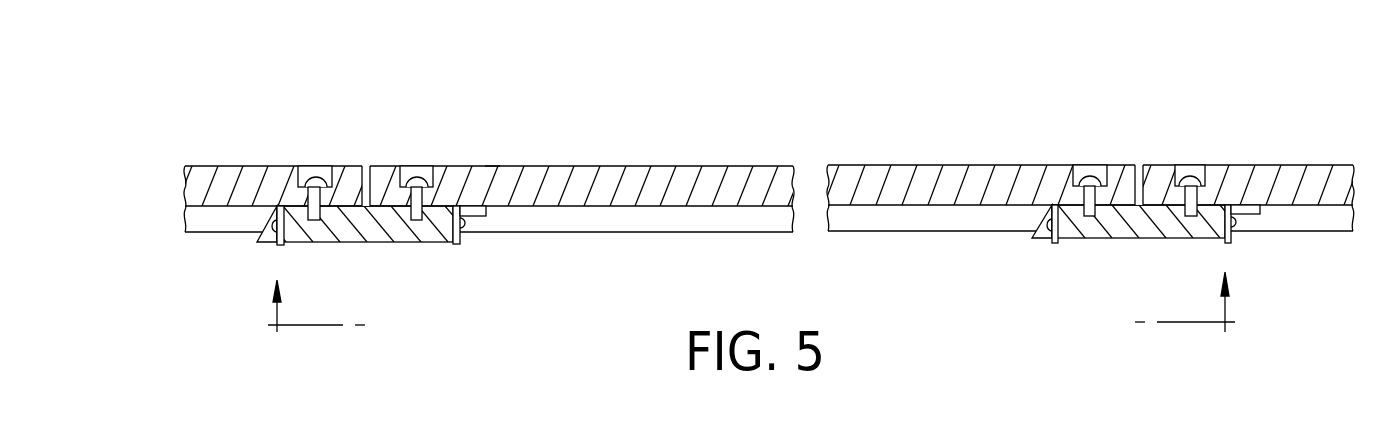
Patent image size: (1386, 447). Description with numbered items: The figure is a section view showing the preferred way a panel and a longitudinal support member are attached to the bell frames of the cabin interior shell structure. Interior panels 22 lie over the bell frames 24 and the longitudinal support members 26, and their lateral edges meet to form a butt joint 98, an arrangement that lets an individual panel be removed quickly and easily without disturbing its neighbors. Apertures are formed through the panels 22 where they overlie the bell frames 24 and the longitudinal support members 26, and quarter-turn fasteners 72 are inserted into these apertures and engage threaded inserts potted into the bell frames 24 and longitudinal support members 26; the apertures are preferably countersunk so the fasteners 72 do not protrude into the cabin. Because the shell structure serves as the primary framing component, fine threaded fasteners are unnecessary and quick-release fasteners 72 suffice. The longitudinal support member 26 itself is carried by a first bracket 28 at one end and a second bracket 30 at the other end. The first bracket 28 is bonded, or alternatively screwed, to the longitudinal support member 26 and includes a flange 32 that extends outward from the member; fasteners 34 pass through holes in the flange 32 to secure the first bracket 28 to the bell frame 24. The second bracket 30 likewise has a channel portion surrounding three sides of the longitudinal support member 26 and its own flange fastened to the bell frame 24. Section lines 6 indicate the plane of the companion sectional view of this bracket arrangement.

The panel 22 is at (473, 166).
The bell frame 24 is at (378, 243).
The longitudinal support member 26 is at (703, 217).
The first bracket 28 is at (492, 166).
The second bracket 30 is at (1053, 244).
The flange 32 is at (456, 245).
The fastener 34 is at (472, 232).
The quarter-turn fastener 72 is at (422, 166).
The butt joint 98 is at (358, 154).
The section line 6- 6 is at (750, 300).